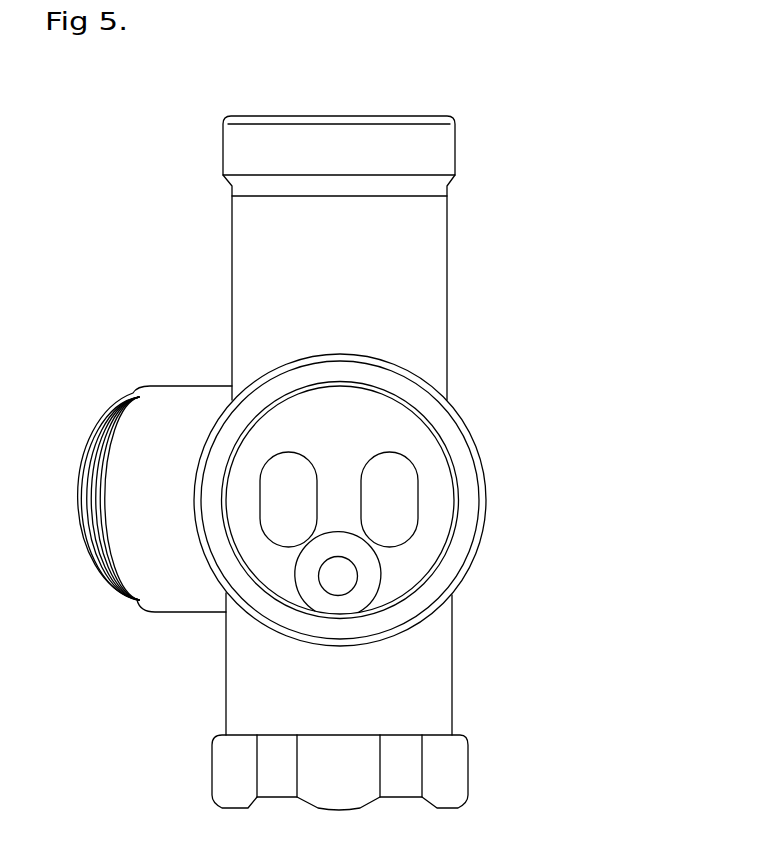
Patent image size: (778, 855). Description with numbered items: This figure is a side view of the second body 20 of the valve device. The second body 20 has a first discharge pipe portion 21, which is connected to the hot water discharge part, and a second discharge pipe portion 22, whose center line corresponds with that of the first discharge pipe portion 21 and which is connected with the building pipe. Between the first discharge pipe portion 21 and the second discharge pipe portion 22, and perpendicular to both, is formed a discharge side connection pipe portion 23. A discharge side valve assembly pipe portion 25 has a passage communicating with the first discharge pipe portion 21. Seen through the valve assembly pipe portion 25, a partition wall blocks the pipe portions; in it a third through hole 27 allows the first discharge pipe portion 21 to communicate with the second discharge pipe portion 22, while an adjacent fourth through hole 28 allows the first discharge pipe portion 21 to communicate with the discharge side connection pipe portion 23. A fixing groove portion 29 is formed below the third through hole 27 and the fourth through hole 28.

The second body 20 is at (379, 463).
The first discharge pipe portion 21 is at (447, 296).
The second discharge pipe portion 22 is at (452, 657).
The discharge side connection pipe portion 23 is at (158, 590).
The discharge side valve assembly pipe portion 25 is at (487, 473).
The third through hole 27 is at (277, 477).
The fourth through hole 28 is at (402, 473).
The fixing groove portion 29 is at (348, 573).